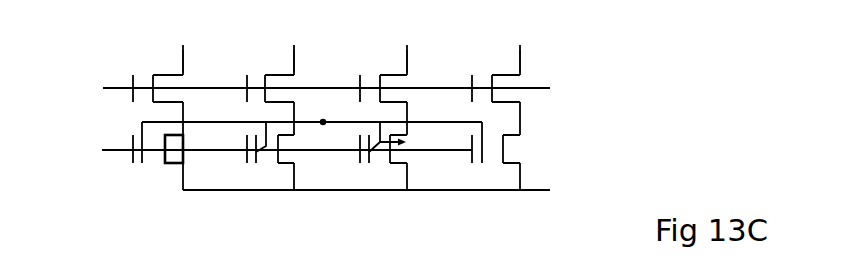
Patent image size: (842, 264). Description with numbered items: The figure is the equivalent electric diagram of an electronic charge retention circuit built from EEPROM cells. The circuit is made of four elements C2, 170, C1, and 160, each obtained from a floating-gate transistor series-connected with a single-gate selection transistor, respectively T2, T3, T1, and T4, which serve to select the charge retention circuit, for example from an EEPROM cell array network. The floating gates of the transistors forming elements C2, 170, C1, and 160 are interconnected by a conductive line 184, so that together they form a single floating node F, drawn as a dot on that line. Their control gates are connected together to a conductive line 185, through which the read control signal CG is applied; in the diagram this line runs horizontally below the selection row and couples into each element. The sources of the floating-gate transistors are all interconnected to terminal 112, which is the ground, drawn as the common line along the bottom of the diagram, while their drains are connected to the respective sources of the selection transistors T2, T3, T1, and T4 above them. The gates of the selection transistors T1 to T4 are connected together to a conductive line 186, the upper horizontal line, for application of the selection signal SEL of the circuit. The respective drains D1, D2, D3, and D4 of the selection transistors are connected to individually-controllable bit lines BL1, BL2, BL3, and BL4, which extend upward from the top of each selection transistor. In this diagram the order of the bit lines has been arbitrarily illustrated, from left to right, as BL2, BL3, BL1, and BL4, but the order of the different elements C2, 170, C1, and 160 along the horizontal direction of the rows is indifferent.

The conductive line 186 is at (118, 87).
The conductive line 185 is at (118, 153).
The conductive line 184 is at (442, 122).
The element 170 is at (282, 173).
The element 160 is at (507, 173).
The terminal 112 is at (550, 190).
The floating node F is at (323, 122).
The element C1 is at (391, 174).
The element C2 is at (171, 172).
The selection transistor T1 is at (402, 74).
The selection transistor T2 is at (170, 74).
The selection transistor T3 is at (289, 74).
The selection transistor T4 is at (514, 74).
The bit line BL1 is at (407, 108).
The bit line BL2 is at (185, 108).
The bit line BL3 is at (295, 108).
The bit line BL4 is at (520, 108).
The drain D1 is at (407, 64).
The drain D2 is at (183, 64).
The drain D3 is at (294, 64).
The drain D4 is at (520, 64).
The selection signal SEL is at (91, 90).
The read control signal CG is at (96, 152).